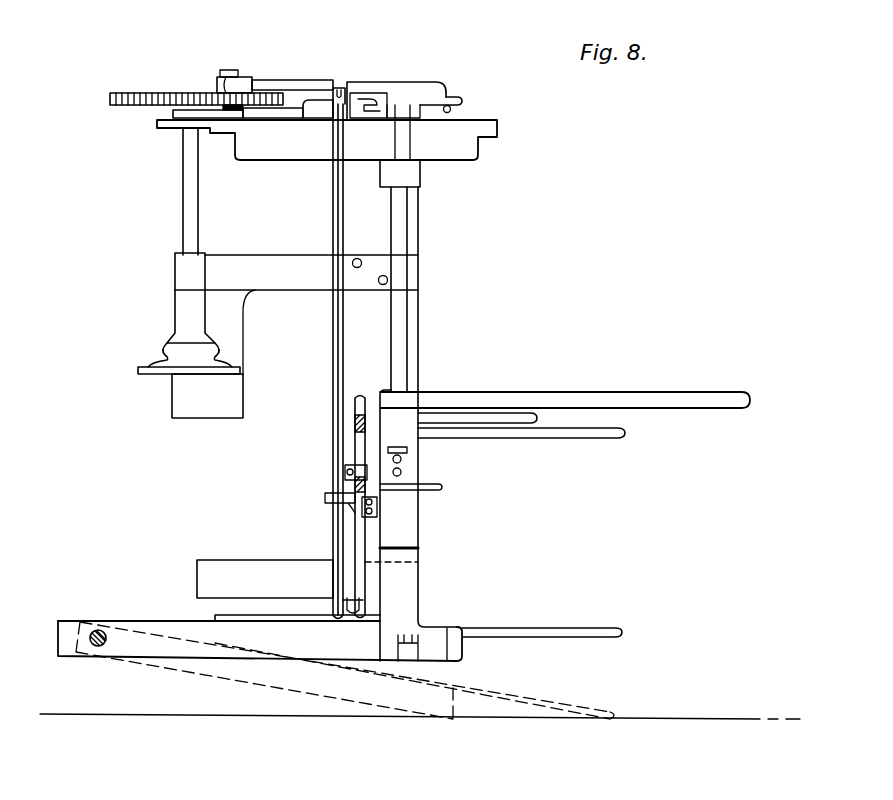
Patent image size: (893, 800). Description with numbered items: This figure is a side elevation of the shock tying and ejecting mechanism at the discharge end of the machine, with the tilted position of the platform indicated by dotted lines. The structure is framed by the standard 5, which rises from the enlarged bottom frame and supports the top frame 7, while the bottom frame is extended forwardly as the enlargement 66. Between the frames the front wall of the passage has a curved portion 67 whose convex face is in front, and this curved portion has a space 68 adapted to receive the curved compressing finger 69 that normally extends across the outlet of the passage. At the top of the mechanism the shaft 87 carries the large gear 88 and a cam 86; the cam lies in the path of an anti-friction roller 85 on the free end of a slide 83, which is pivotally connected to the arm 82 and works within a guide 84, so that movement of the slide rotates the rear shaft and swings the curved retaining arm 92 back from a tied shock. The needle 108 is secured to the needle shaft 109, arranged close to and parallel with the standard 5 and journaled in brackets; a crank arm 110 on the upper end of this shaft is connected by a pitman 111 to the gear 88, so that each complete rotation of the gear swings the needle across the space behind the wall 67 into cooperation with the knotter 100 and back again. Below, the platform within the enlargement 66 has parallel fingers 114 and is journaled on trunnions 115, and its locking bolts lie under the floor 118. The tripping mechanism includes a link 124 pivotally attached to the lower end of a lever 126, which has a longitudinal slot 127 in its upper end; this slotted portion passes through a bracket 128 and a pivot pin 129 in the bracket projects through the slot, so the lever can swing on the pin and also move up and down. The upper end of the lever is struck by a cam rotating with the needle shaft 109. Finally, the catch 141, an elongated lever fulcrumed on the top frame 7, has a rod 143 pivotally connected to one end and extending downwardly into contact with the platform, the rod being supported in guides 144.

The standard 5 is at (383, 342).
The top frame 7 is at (500, 127).
The enlargement of the bottom frame 66 is at (140, 645).
The curved portion of the front wall 67 is at (260, 267).
The space 68 is at (228, 440).
The compressing finger 69 is at (578, 435).
The arm 82 is at (383, 113).
The slide 83 is at (287, 108).
The guide 84 is at (318, 104).
The anti-friction roller 85 is at (233, 100).
The cam 86 is at (188, 110).
The shaft 87 is at (188, 187).
The large gear 88 is at (122, 93).
The retaining arm 92 is at (503, 415).
The knotter 100 is at (182, 395).
The needle 108 is at (602, 398).
The needle shaft 109 is at (400, 242).
The crank arm 110 is at (440, 100).
The pitman 111 is at (383, 86).
The fingers 114 is at (590, 608).
The trunnions 115 is at (125, 603).
The floor 118 is at (240, 615).
The link 124 is at (373, 598).
The lever 126 is at (360, 538).
The longitudinal slot 127 is at (357, 442).
The bracket 128 is at (347, 470).
The pivot pin 129 is at (368, 473).
The catch 141 is at (344, 96).
The rod 143 is at (330, 393).
The guides 144 is at (328, 500).